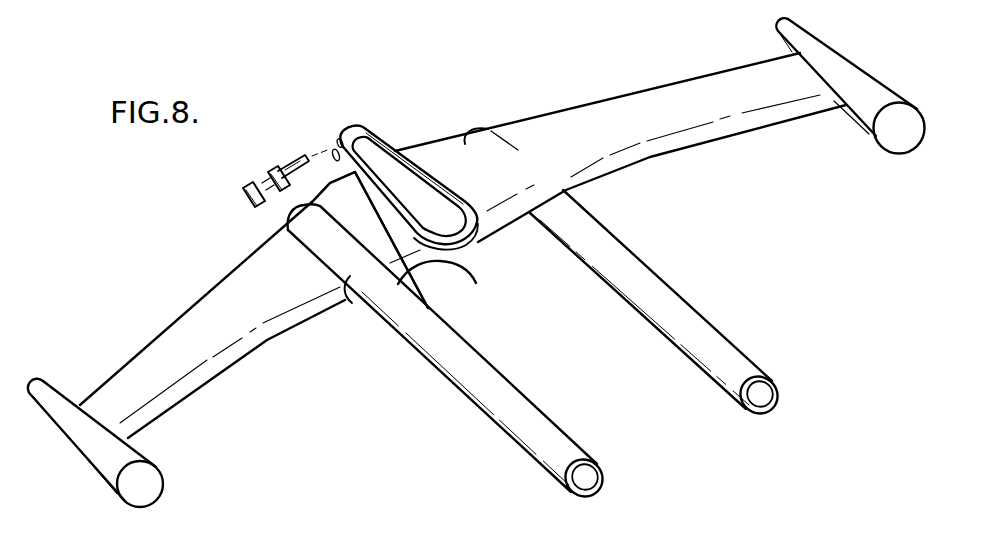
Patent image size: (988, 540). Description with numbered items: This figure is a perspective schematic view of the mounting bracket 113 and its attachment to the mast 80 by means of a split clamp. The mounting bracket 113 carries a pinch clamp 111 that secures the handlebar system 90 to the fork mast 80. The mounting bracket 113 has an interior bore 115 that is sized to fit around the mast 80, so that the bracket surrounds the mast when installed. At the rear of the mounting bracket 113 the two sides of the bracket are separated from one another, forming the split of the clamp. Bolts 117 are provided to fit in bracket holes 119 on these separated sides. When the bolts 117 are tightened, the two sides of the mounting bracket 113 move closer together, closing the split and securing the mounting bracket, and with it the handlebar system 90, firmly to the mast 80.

The handlebar system 90 is at (621, 86).
The mast 80 is at (396, 148).
The pinch clamp 111 is at (358, 134).
The mounting bracket 113 is at (476, 240).
The interior bore 115 is at (442, 200).
The bolts 117 is at (268, 175).
The bracket holes 119 is at (331, 154).